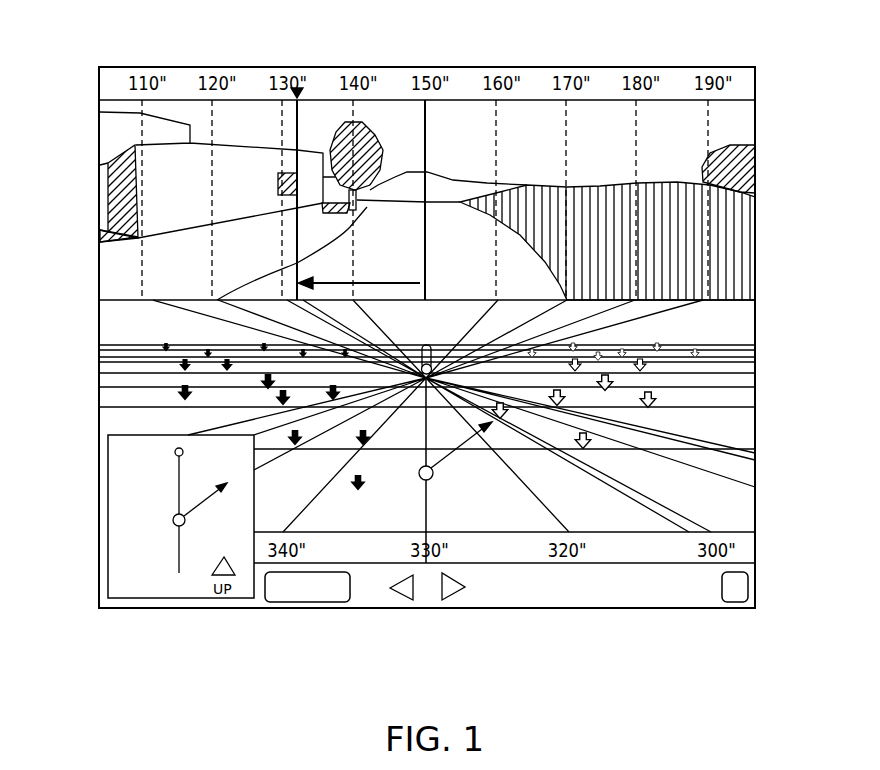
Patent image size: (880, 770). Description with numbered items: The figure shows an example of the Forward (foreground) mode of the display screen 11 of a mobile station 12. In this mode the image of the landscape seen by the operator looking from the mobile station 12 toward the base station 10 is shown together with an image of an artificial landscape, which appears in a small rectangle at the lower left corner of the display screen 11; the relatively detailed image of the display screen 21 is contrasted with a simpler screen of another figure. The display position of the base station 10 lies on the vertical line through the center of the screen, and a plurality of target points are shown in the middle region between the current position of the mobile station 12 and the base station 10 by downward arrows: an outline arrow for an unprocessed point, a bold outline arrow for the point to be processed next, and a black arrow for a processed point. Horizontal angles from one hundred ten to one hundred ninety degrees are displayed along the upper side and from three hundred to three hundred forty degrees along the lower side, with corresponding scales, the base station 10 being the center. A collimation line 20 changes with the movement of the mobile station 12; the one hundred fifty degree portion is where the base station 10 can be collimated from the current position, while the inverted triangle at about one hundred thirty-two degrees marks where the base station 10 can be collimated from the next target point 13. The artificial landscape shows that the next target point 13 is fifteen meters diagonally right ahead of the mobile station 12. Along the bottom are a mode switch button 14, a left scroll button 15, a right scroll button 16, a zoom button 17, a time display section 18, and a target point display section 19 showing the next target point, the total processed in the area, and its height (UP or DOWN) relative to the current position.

The base station 10 is at (428, 345).
The display screen 11 is at (756, 491).
The mobile station 12 is at (424, 477).
The next target point 13 is at (500, 412).
The mode switch button 14 is at (302, 602).
The left scroll button 15 is at (397, 601).
The right scroll button 16 is at (455, 599).
The zoom button 17 is at (748, 587).
The time display section 18 is at (675, 601).
The target point display section 19 is at (523, 601).
The collimation line 20 is at (428, 127).
The display screen 21 is at (299, 116).